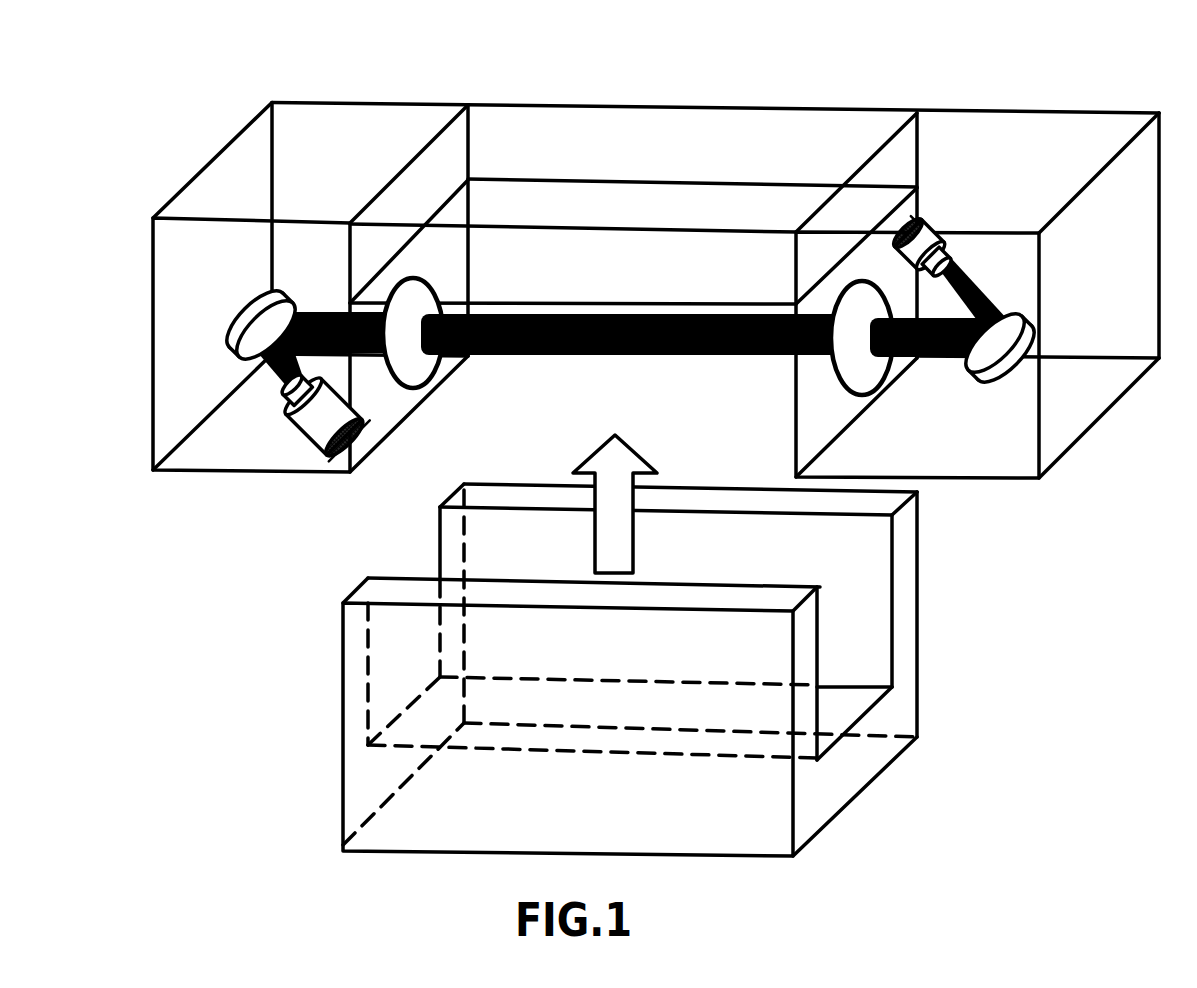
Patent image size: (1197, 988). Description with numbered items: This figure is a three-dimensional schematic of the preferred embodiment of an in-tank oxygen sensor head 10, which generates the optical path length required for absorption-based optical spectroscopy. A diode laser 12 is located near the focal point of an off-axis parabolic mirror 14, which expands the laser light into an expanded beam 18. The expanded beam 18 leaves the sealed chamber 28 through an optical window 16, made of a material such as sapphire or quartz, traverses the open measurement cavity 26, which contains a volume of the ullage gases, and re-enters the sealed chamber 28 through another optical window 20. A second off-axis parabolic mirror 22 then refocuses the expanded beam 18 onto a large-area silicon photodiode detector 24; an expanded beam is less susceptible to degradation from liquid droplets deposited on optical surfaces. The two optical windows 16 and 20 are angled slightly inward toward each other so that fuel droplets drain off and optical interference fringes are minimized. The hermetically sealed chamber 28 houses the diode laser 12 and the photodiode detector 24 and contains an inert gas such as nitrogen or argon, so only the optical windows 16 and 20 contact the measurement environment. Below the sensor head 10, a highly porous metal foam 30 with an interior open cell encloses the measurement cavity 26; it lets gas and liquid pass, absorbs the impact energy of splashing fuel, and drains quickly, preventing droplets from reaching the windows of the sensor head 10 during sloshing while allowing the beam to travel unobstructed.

The sensor head 10 is at (397, 65).
The diode laser 12 is at (942, 215).
The off-axis parabolic mirror 14 is at (1000, 385).
The optical window 16 is at (862, 397).
The expanded beam 18 is at (630, 326).
The optical window 20 is at (397, 387).
The off-axis parabolic mirror 22 is at (238, 307).
The photodiode detector 24 is at (292, 444).
The measurement cavity 26 is at (868, 614).
The sealed chamber 28 is at (633, 219).
The metal foam 30 is at (882, 780).